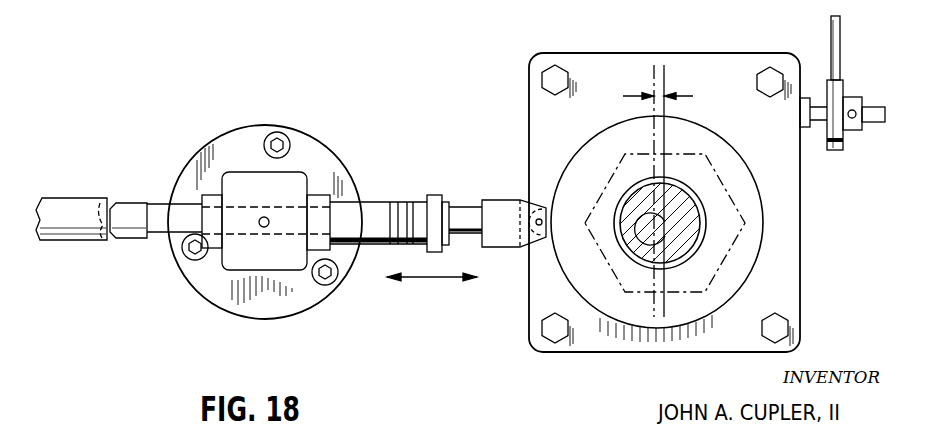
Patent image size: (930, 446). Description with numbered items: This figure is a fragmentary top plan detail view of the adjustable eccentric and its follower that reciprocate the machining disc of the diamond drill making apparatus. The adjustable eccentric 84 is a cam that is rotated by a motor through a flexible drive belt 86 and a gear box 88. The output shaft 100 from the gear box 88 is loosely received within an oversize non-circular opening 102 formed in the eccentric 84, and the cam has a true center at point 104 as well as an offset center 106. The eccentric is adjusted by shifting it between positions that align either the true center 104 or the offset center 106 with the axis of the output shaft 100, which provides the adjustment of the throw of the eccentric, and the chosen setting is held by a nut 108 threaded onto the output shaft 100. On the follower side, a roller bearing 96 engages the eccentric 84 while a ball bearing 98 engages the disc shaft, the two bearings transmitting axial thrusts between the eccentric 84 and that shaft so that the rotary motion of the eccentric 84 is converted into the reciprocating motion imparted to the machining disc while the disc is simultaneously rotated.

The adjustable eccentric 84 is at (727, 160).
The flexible drive belt 86 is at (840, 60).
The gear box 88 is at (790, 233).
The roller bearing 96 is at (550, 220).
The ball bearing 98 is at (106, 200).
The output shaft 100 is at (683, 197).
The oversize non-circular opening 102 is at (630, 187).
The true center 104 is at (633, 237).
The offset center 106 is at (665, 191).
The nut 108 is at (748, 211).